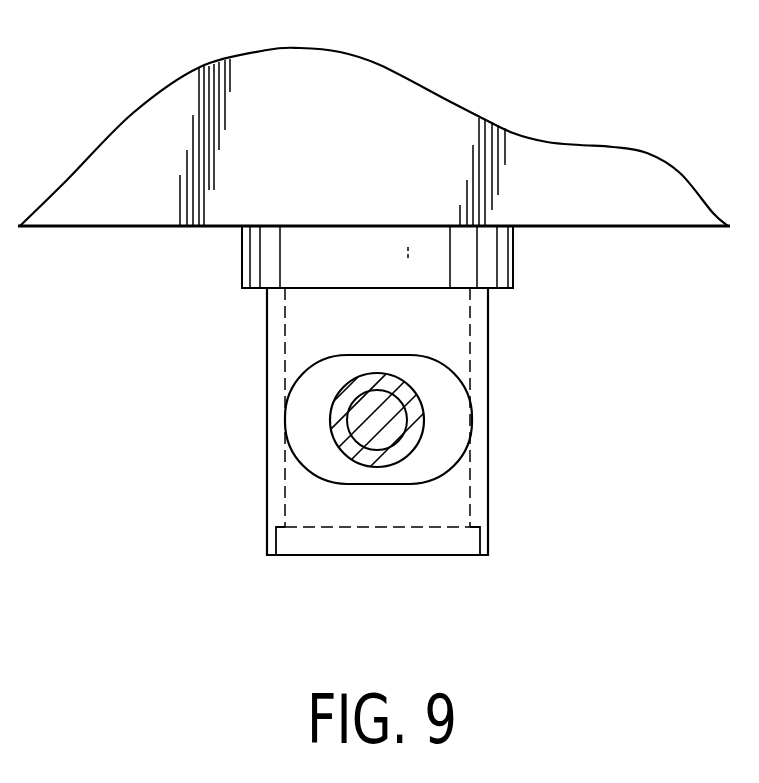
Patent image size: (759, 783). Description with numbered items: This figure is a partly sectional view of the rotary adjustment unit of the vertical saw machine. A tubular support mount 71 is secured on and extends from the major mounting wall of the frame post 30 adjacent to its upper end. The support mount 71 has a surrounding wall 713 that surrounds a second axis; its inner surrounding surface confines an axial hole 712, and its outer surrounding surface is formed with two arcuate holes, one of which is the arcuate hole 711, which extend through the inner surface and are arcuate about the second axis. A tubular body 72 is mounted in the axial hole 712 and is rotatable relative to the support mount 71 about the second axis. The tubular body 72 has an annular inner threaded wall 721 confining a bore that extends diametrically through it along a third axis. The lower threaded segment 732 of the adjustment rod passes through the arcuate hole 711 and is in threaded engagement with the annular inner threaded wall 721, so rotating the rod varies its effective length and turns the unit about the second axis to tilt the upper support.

The frame post 30 is at (157, 137).
The tubular support mount 71 is at (490, 327).
The arcuate hole 711 is at (472, 421).
The axial hole 712 is at (283, 345).
The surrounding wall 713 is at (275, 478).
The tubular body 72 is at (313, 425).
The annular inner threaded wall 721 is at (420, 442).
The lower threaded segment 732 is at (382, 462).